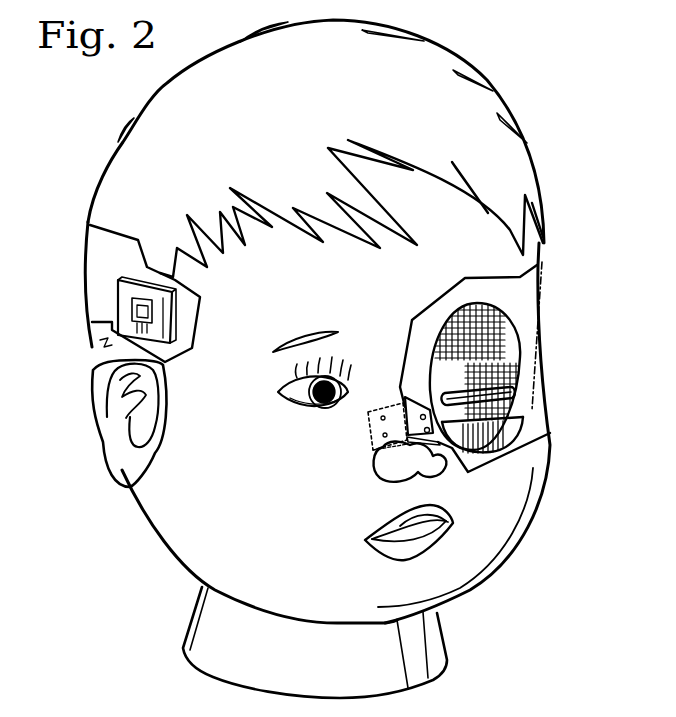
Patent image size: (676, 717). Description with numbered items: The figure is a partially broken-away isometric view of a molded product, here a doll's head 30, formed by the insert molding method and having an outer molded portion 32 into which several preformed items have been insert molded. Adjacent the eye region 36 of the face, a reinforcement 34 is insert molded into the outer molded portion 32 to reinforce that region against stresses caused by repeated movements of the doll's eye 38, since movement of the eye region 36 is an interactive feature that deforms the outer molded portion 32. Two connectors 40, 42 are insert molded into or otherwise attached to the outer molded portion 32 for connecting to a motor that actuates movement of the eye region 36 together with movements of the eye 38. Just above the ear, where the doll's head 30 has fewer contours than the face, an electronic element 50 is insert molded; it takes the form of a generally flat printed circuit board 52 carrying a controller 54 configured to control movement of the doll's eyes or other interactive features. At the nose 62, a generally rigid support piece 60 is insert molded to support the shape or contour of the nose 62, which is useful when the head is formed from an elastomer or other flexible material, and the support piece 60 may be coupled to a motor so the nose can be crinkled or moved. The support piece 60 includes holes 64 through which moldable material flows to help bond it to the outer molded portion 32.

The doll's head 30 is at (595, 209).
The outer molded portion 32 is at (548, 497).
The reinforcement 34 is at (508, 355).
The eye region 36 is at (517, 295).
The eye 38 is at (280, 394).
The connector 40 is at (508, 425).
The connector 42 is at (500, 383).
The electronic element 50 is at (99, 278).
The printed circuit board 52 is at (125, 333).
The controller 54 is at (134, 312).
The support piece 60 is at (372, 438).
The nose 62 is at (374, 478).
The holes 64 is at (382, 406).